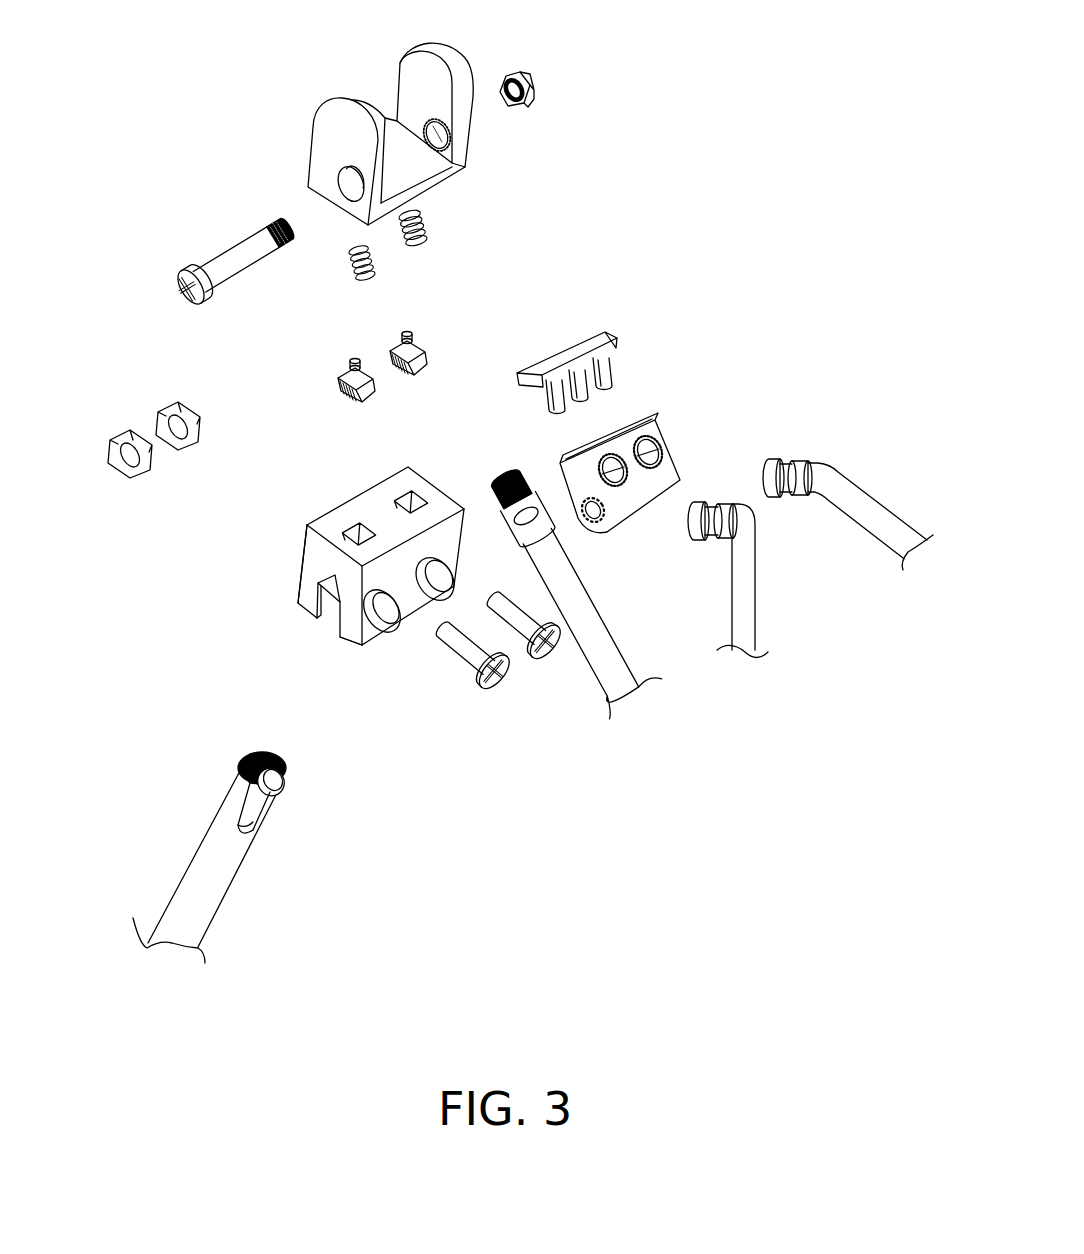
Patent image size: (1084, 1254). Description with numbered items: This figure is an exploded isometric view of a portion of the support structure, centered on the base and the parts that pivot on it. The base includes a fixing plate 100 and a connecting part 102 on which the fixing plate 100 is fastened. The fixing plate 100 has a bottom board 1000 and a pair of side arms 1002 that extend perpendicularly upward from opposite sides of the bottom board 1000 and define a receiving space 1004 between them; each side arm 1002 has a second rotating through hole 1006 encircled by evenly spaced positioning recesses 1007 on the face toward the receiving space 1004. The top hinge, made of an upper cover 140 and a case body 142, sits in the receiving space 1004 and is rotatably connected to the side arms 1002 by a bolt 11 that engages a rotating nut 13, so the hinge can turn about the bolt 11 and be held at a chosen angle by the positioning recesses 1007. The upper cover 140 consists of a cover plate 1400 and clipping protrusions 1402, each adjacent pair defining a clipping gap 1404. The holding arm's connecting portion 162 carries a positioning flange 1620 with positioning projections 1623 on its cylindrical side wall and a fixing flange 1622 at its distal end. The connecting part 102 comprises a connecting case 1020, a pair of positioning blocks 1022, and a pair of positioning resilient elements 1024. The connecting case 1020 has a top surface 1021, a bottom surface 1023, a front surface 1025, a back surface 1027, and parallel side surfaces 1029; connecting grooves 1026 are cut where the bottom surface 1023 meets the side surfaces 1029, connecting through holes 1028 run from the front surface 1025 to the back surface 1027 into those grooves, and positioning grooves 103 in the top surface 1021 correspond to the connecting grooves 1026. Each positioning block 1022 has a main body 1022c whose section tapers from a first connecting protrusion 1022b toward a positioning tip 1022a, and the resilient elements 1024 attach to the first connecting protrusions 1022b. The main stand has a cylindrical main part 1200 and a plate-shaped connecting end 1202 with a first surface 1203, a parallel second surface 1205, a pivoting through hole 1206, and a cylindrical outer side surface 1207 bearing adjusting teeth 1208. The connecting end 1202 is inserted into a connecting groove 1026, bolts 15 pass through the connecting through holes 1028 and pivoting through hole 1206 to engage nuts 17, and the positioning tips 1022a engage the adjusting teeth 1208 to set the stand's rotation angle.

The fixing plate 100 is at (310, 106).
The bottom board 1000 is at (433, 177).
The side arms 1002 is at (415, 79).
The receiving space 1004 is at (383, 113).
The second rotating through hole 1006 is at (433, 127).
The positioning recesses 1007 is at (437, 118).
The bolt 11 is at (253, 253).
The rotating nut 13 is at (531, 78).
The nuts 17 is at (162, 427).
The connecting part 102 is at (236, 315).
The positioning resilient elements 1024 is at (353, 278).
The positioning blocks 1022 is at (342, 373).
The positioning tip 1022a is at (415, 370).
The first connecting protrusion 1022b is at (412, 338).
The main body 1022c is at (428, 347).
The connecting case 1020 is at (365, 469).
The positioning grooves 103 is at (354, 523).
The top surface 1021 is at (412, 480).
The front surface 1025 is at (443, 538).
The back surface 1027 is at (298, 556).
The side surfaces 1029 is at (308, 587).
The connecting grooves 1026 is at (328, 608).
The connecting through holes 1028 is at (378, 623).
The bottom surface 1023 is at (345, 650).
The bolts 15 is at (508, 680).
The upper cover 140 is at (620, 310).
The cover plate 1400 is at (565, 352).
The clipping protrusions 1402 is at (608, 367).
The clipping gap 1404 is at (598, 385).
The case body 142 is at (632, 505).
The connecting portion 162 is at (797, 507).
The positioning flange 1620 is at (800, 460).
The fixing flange 1622 is at (770, 472).
The positioning projections 1623 is at (782, 463).
The main part 1200 is at (210, 887).
The connecting end 1202 is at (297, 770).
The first surface 1203 is at (253, 800).
The second surface 1205 is at (220, 797).
The pivoting through hole 1206 is at (267, 785).
The outer side surface 1207 is at (258, 807).
The adjusting teeth 1208 is at (253, 760).